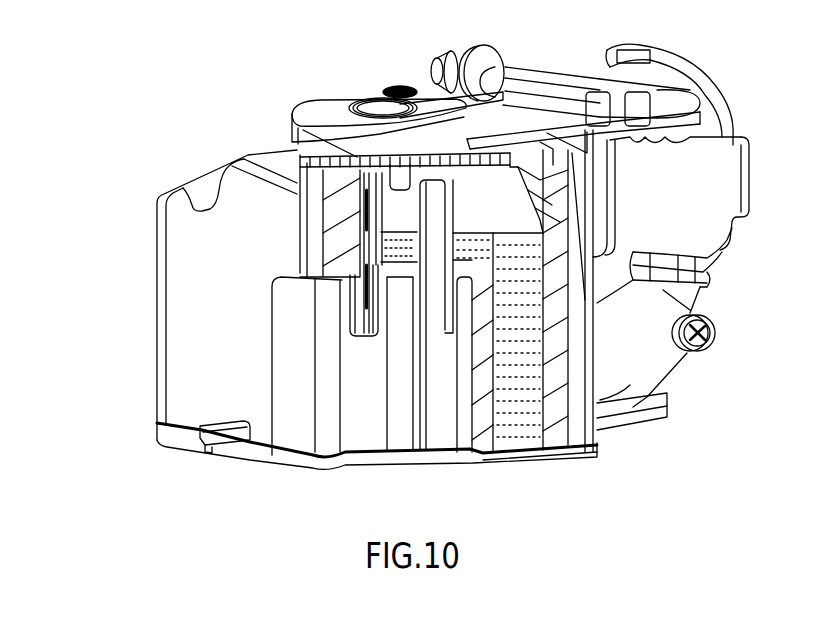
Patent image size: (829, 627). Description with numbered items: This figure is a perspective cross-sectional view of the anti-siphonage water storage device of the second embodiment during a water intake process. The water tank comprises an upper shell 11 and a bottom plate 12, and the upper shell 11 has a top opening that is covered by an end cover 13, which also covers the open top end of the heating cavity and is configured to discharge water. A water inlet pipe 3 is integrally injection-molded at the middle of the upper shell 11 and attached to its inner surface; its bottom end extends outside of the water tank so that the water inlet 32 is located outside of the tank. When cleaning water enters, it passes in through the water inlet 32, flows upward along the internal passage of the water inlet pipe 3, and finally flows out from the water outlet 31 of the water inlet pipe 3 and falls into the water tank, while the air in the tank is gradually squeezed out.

The upper shell 11 is at (210, 340).
The bottom plate 12 is at (290, 458).
The end cover 13 is at (363, 150).
The water inlet pipe 3 is at (373, 257).
The water outlet 31 is at (352, 175).
The water inlet 32 is at (367, 337).